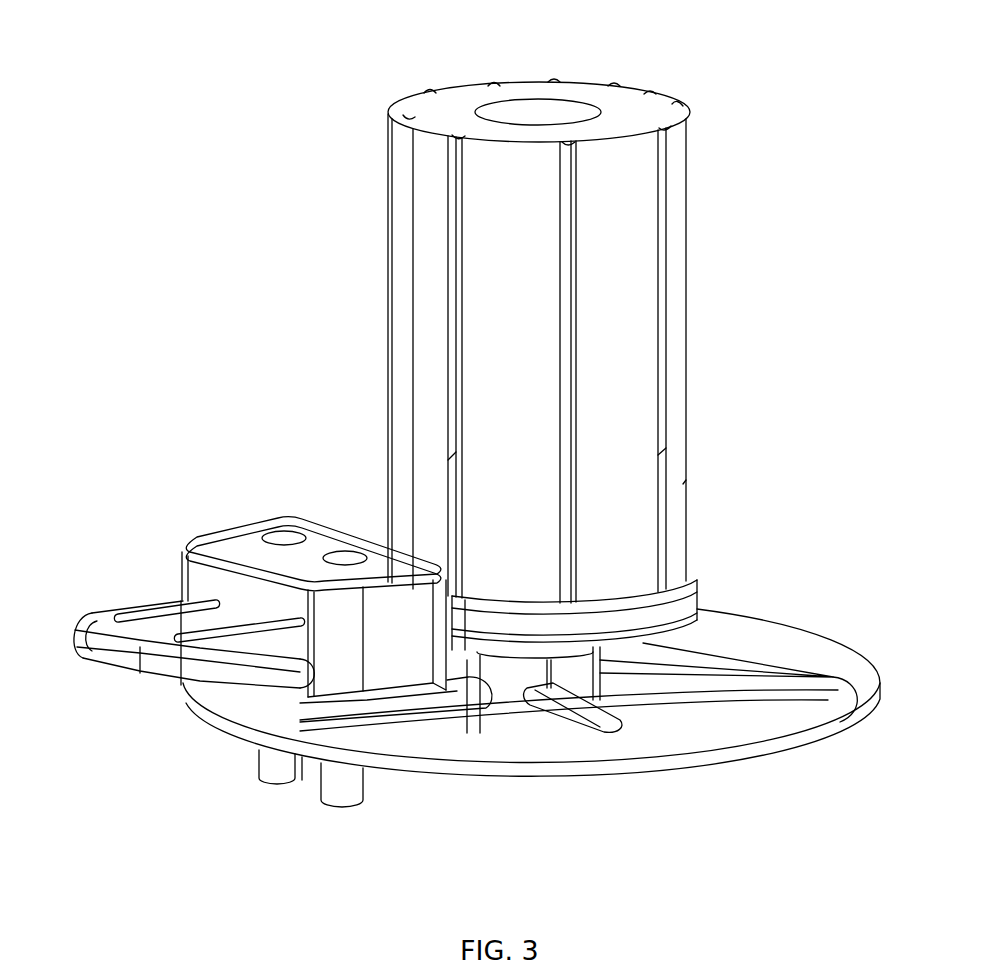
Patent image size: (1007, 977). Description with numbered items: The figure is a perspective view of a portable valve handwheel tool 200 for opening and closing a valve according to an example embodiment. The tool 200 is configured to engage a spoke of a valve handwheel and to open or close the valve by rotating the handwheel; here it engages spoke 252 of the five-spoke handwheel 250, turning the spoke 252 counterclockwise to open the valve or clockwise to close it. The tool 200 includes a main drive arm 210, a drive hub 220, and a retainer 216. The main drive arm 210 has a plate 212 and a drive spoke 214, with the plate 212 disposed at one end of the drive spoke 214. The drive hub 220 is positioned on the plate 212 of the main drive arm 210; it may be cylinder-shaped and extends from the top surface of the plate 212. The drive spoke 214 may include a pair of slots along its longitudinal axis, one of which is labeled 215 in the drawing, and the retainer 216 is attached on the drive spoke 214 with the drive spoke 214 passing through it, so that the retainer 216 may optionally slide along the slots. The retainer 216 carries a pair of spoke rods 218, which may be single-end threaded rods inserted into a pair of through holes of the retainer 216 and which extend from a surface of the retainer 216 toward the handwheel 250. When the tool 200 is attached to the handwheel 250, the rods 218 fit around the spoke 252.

The portable valve handwheel tool 200 is at (115, 57).
The main drive arm 210 is at (110, 344).
The plate 212 is at (565, 627).
The drive spoke 214 is at (108, 620).
The slot 215 is at (207, 632).
The retainer 216 is at (240, 537).
The spoke rods 218 is at (252, 763).
The drive hub 220 is at (383, 273).
The handwheel 250 is at (762, 733).
The spoke 252 is at (435, 703).